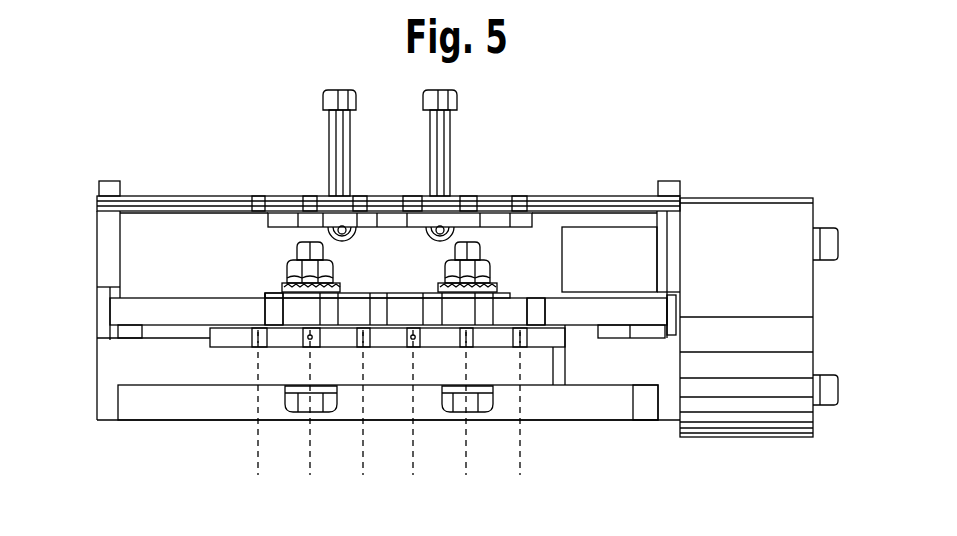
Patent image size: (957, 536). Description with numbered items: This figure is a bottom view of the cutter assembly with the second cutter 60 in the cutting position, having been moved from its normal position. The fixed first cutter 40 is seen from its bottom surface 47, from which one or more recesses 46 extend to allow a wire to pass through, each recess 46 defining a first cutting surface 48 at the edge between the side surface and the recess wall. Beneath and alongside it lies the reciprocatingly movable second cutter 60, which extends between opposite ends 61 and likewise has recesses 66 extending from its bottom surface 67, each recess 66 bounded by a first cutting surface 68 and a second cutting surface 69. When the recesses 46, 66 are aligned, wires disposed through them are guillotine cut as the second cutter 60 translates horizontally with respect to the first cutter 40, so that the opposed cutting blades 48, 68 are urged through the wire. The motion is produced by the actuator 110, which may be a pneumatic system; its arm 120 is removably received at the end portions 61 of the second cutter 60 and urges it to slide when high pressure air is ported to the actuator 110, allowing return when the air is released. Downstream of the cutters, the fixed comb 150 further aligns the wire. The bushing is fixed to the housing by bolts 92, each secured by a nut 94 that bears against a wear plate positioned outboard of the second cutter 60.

The first cutter 40 is at (227, 338).
The recess 46 is at (312, 339).
The bottom surface 47 is at (500, 340).
The first cutting surface 48 is at (267, 336).
The second cutter 60 is at (173, 313).
The ends 61 is at (130, 315).
The recess 66 is at (273, 312).
The bottom surface 67 is at (197, 312).
The first cutting surface 68 is at (263, 320).
The second cutting surface 69 is at (435, 303).
The bolt 92 is at (478, 250).
The nut 94 is at (460, 270).
The actuator 110 is at (802, 298).
The arm 120 is at (647, 338).
The fixed comb 150 is at (601, 206).